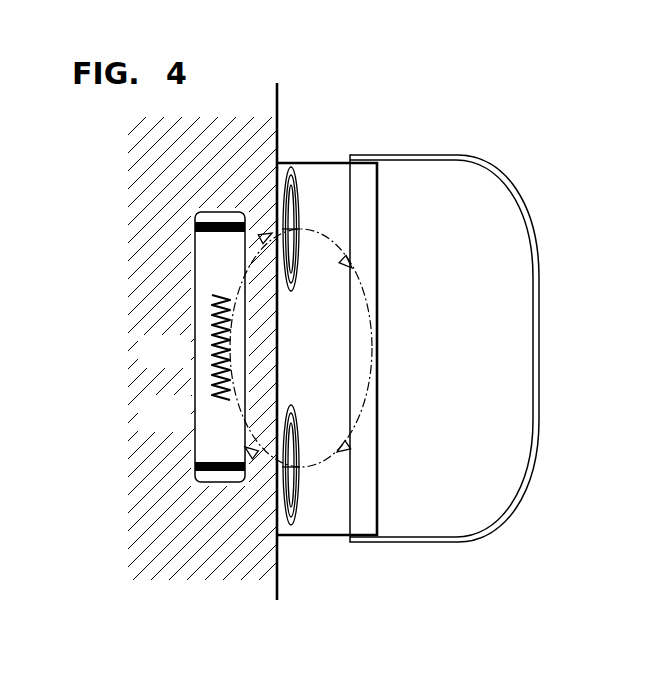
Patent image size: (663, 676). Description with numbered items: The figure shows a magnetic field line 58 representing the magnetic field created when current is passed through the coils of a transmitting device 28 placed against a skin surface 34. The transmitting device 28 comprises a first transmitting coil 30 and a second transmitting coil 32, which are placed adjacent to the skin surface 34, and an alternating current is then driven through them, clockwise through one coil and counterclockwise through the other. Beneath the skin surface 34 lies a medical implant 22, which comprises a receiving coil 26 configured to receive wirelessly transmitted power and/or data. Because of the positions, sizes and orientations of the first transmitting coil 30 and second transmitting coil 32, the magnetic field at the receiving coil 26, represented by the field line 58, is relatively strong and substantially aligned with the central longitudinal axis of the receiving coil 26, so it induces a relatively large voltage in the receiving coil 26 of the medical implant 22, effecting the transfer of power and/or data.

The skin surface 34 is at (277, 100).
The first transmitting coil 30 is at (293, 168).
The second transmitting coil 32 is at (291, 527).
The transmitting device 28 is at (377, 467).
The magnetic field line 58 is at (377, 298).
The medical implant 22 is at (195, 335).
The receiving coil 26 is at (226, 400).